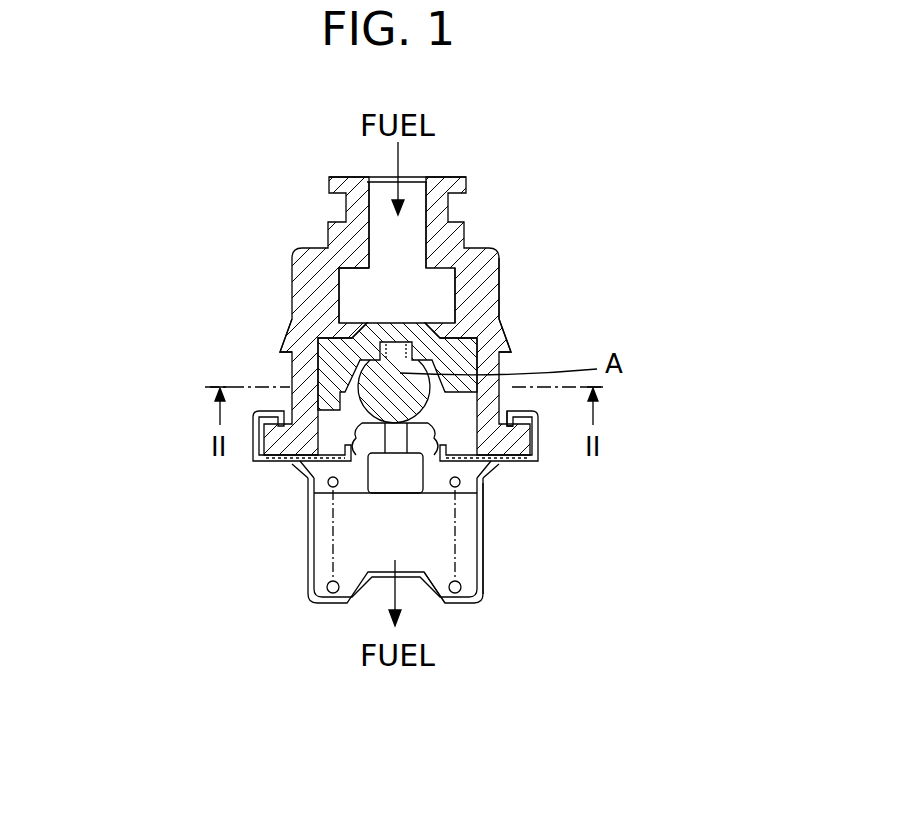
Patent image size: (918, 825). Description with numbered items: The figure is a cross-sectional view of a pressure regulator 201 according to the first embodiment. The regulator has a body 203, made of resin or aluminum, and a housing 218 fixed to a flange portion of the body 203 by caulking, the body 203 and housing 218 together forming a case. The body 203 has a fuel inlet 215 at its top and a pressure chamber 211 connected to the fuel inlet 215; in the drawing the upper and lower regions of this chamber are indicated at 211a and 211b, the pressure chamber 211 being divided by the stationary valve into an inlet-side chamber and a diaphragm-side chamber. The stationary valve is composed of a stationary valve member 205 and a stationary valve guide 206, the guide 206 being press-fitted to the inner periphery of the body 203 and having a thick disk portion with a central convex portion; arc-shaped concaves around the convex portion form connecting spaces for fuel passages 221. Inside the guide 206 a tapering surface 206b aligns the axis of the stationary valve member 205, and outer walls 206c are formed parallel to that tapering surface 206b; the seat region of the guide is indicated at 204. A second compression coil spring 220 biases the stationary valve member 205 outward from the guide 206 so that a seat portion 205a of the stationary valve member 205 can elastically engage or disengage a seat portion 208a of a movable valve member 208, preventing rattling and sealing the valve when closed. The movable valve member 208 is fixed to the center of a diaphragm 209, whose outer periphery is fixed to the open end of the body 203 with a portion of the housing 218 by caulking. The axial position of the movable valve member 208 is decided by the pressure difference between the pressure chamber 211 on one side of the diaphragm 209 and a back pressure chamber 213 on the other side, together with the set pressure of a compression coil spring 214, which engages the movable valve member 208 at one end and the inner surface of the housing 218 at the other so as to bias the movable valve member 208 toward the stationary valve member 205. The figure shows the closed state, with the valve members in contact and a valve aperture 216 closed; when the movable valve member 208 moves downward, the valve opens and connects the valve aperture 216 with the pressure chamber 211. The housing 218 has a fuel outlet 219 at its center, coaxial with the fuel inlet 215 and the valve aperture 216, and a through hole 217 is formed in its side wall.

The pressure regulator 201 is at (295, 248).
The body 203 is at (492, 275).
The valve seat 204 is at (358, 325).
The stationary valve member 205 is at (367, 395).
The seat portion of the stationary valve member 205a is at (373, 405).
The stationary valve guide 206 is at (505, 353).
The tapering surface 206b is at (256, 468).
The outer walls 206c is at (345, 365).
The movable valve member 208 is at (385, 440).
The seat portion of the movable valve member 208a is at (475, 440).
The diaphragm 209 is at (481, 477).
The pressure chamber 211 is at (440, 301).
The upper passage portion 211a is at (350, 293).
The lower passage portion 211b is at (527, 405).
The back pressure chamber 213 is at (482, 585).
The compression coil spring 214 is at (332, 605).
The fuel inlet 215 is at (413, 211).
The valve aperture 216 is at (483, 493).
The through hole 217 is at (483, 540).
The housing 218 is at (473, 603).
The fuel outlet 219 is at (430, 592).
The second compression coil spring 220 is at (350, 322).
The fuel passages 221 is at (330, 373).